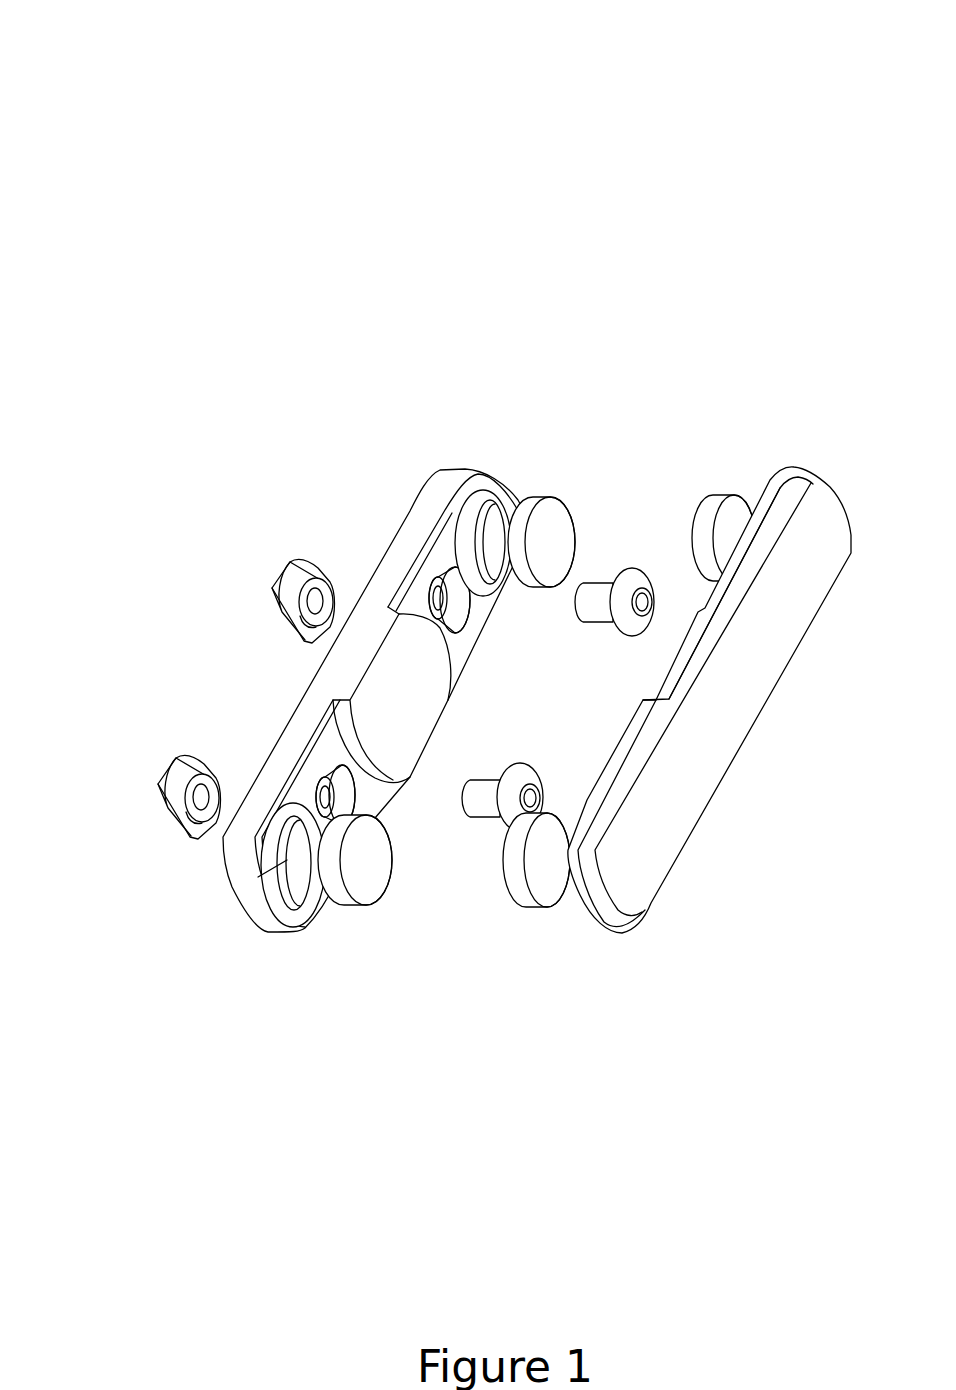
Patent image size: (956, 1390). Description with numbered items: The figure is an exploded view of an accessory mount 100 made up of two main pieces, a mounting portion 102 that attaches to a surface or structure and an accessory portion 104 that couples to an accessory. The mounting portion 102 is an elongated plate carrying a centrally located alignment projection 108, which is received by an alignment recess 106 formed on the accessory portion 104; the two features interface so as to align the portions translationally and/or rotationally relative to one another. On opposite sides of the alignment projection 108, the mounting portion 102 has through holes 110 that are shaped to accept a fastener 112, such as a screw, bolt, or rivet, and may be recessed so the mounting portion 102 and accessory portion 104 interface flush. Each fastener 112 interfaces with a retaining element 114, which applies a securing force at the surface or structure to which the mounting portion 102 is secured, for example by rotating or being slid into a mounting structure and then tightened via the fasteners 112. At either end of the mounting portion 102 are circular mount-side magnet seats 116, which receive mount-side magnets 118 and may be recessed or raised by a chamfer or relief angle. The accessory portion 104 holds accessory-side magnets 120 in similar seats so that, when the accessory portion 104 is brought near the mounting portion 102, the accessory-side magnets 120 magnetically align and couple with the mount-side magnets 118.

The accessory mount 100 is at (200, 74).
The mounting portion 102 is at (454, 459).
The accessory portion 104 is at (818, 459).
The alignment recess 106 is at (674, 662).
The alignment projection 108 is at (407, 707).
The through holes 110 is at (430, 632).
The fastener 112 is at (630, 568).
The retaining element 114 is at (272, 587).
The mount-side magnet seats 116 is at (468, 542).
The mount-side magnets 118 is at (555, 495).
The accessory-side magnets 120 is at (728, 495).